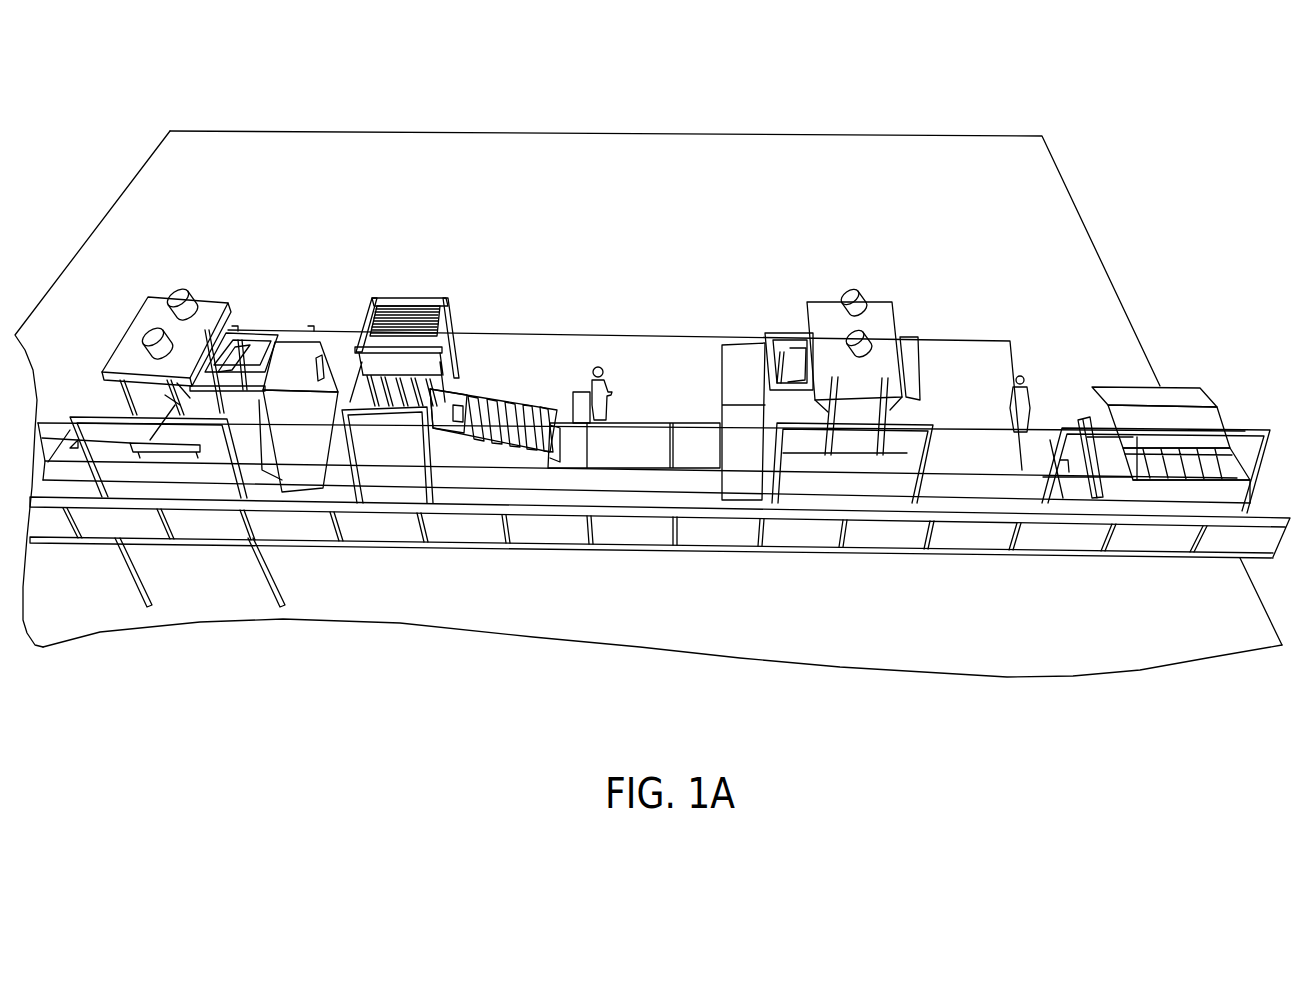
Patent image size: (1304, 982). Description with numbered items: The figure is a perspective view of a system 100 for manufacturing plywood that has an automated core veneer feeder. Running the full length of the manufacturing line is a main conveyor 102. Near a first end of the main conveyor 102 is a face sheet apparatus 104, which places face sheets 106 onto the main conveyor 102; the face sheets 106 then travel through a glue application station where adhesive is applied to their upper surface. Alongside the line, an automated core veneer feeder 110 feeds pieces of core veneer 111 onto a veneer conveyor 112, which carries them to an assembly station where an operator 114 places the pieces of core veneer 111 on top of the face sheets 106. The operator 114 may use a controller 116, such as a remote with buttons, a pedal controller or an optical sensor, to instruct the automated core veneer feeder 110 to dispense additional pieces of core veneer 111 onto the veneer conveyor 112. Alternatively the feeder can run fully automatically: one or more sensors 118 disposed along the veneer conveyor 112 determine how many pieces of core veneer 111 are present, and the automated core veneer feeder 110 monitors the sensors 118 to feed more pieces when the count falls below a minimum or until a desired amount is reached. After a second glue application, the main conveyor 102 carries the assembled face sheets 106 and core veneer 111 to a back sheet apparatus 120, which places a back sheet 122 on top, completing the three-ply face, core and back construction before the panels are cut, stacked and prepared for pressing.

The system 100 is at (78, 131).
The main conveyor 102 is at (87, 415).
The face sheet apparatus 104 is at (203, 300).
The face sheet 106 is at (263, 460).
The automated core veneer feeder 110 is at (413, 303).
The core veneer 111 is at (503, 412).
The veneer conveyor 112 is at (463, 403).
The operator 114 is at (612, 388).
The controller 116 is at (577, 388).
The sensor 118 is at (467, 437).
The back sheet apparatus 120 is at (875, 312).
The back sheet 122 is at (978, 437).